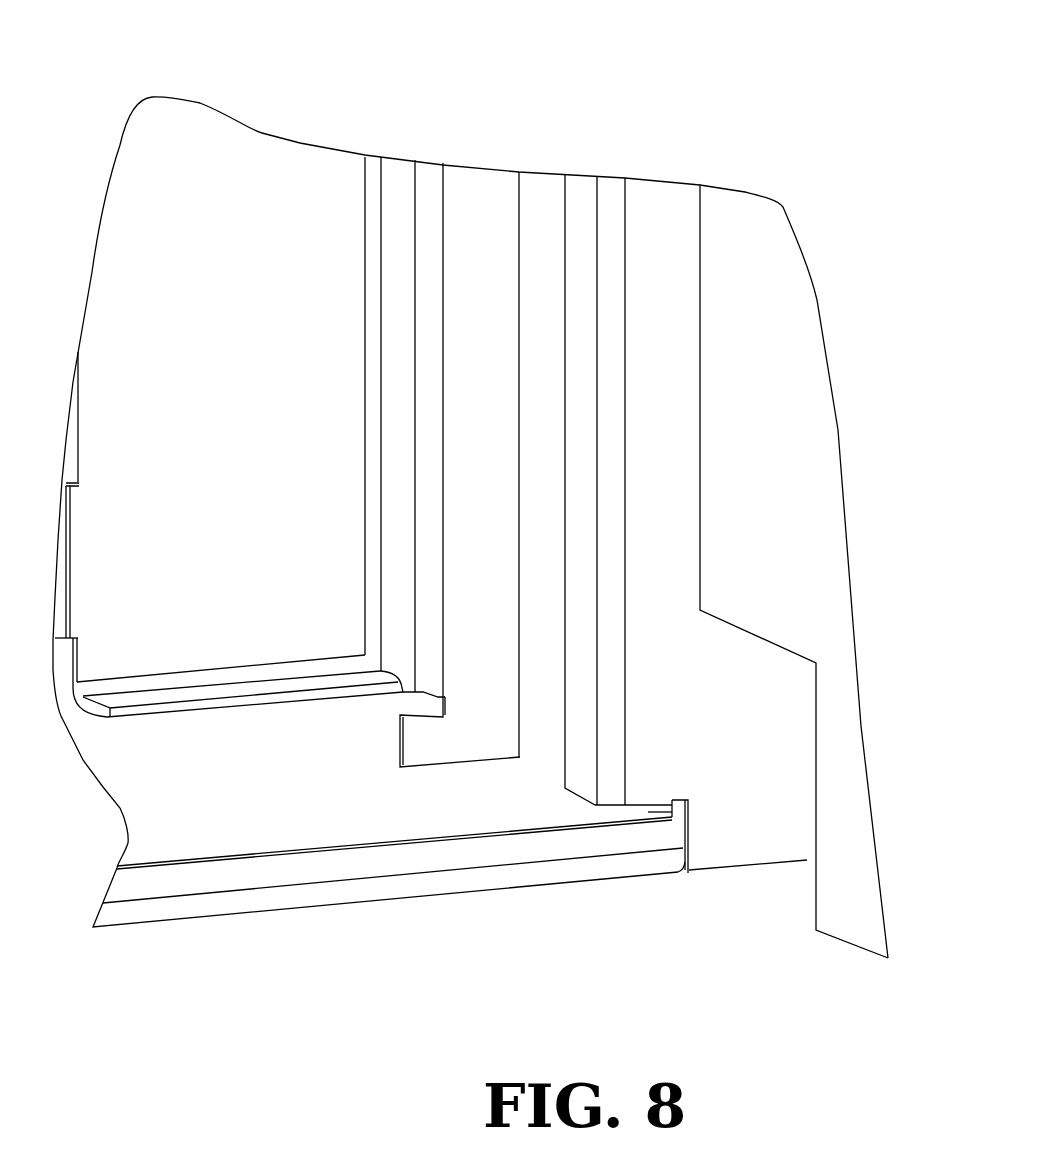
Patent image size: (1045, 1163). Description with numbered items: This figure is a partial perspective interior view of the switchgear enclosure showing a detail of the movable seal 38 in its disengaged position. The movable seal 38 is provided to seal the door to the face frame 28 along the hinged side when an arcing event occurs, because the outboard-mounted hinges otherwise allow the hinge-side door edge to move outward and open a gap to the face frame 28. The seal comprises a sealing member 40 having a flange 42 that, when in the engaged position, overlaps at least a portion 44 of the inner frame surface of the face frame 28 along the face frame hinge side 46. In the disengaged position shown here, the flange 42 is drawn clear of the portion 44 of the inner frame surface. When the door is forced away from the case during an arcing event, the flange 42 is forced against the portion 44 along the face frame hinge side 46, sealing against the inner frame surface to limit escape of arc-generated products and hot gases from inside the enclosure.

The movable seal 38 is at (505, 107).
The sealing member 40 is at (233, 198).
The flange 42 is at (473, 700).
The portion of inner frame surface 44 is at (655, 227).
The face frame hinge side 46 is at (723, 407).
The face frame 28 is at (645, 757).